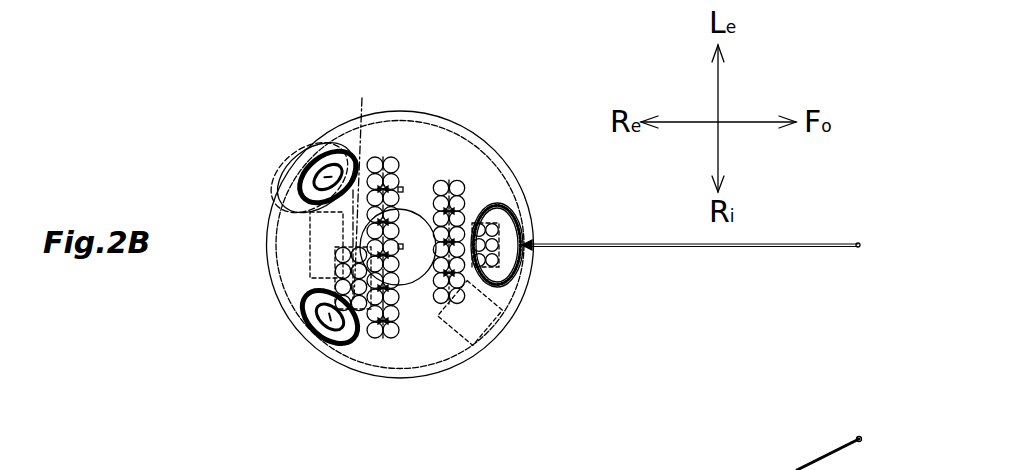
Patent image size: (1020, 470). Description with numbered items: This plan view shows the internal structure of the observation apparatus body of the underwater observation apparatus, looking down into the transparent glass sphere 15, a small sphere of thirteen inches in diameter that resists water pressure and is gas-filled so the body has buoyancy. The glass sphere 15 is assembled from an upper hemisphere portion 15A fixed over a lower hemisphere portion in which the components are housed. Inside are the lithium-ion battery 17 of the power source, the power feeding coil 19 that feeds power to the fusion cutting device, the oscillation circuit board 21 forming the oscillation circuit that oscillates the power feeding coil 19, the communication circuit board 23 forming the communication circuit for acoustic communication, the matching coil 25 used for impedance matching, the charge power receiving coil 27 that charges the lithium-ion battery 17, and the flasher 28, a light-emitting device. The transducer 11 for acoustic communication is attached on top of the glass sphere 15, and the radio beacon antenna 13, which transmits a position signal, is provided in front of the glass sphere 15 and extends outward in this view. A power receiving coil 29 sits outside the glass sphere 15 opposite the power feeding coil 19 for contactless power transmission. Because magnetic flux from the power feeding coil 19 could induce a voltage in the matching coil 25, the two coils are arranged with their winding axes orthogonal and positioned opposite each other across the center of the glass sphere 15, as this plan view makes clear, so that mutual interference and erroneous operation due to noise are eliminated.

The transducer 11 is at (413, 282).
The radio beacon antenna 13 is at (624, 252).
The glass sphere 15 is at (507, 160).
The upper hemisphere portion 15A is at (500, 188).
The lithium-ion battery 17 is at (397, 157).
The power feeding coil 19 is at (372, 183).
The oscillation circuit board 21 is at (317, 263).
The communication circuit board 23 is at (358, 222).
The matching coil 25 is at (477, 320).
The charge power receiving coil 27 is at (327, 340).
The flasher 28 is at (515, 275).
The power receiving coil 29 is at (300, 160).